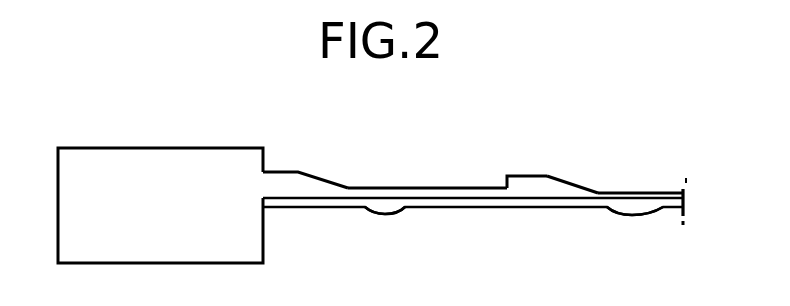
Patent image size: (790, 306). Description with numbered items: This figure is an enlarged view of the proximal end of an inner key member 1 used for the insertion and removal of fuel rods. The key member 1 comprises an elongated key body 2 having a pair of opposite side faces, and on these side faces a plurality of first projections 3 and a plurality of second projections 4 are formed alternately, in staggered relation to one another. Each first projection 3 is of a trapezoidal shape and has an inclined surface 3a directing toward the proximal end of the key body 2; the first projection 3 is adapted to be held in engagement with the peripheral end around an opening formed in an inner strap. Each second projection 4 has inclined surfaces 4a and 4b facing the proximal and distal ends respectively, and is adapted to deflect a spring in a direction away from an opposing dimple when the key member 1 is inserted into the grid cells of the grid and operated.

The key member 1 is at (374, 170).
The key body 2 is at (453, 188).
The first projection 3 is at (530, 175).
The inclined surface 3a is at (582, 190).
The second projection 4 is at (377, 213).
The inclined surface 4a is at (397, 212).
The inclined surface 4b is at (367, 212).